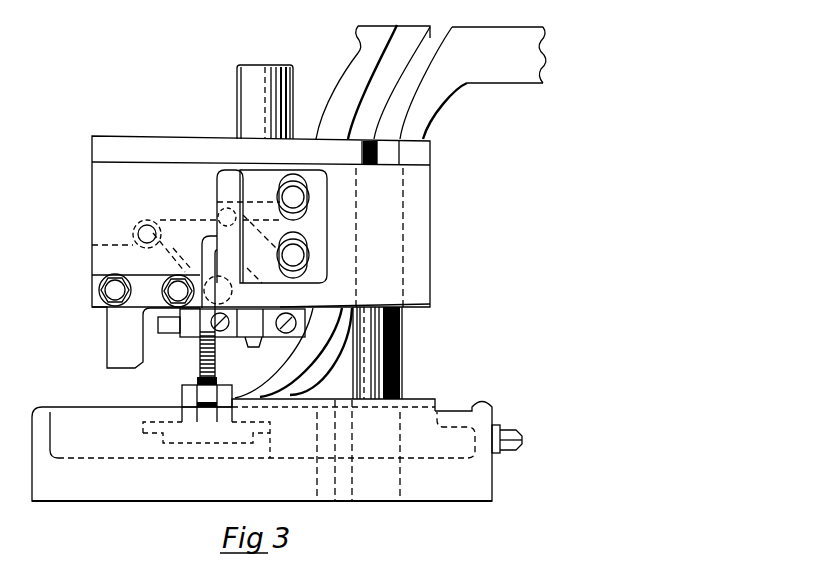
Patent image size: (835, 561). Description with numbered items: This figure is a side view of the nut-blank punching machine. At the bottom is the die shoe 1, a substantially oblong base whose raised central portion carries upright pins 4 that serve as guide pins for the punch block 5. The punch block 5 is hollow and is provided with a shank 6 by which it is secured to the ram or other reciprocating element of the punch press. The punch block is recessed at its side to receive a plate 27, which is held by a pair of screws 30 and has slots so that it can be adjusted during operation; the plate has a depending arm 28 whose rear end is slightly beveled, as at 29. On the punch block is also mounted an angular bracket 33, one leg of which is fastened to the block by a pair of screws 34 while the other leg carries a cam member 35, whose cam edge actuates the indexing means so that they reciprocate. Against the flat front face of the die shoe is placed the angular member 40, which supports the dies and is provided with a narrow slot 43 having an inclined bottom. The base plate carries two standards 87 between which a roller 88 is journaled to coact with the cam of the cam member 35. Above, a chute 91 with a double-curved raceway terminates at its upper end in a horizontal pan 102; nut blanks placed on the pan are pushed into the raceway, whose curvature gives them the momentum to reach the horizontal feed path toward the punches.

The die shoe 1 is at (475, 483).
The upright pins 4 is at (397, 361).
The punch block 5 is at (424, 192).
The shank 6 is at (292, 84).
The plate 27 is at (143, 284).
The depending arm 28 is at (113, 347).
The bevel 29 is at (136, 366).
The screws 30 is at (172, 292).
The angular bracket 33 is at (223, 192).
The screws 34 is at (294, 199).
The cam member 35 is at (200, 370).
The angular member 40 is at (288, 447).
The narrow slot 43 is at (313, 402).
The standards 87 is at (223, 415).
The roller 88 is at (202, 395).
The chute 91 is at (439, 97).
The horizontal pan 102 is at (541, 32).